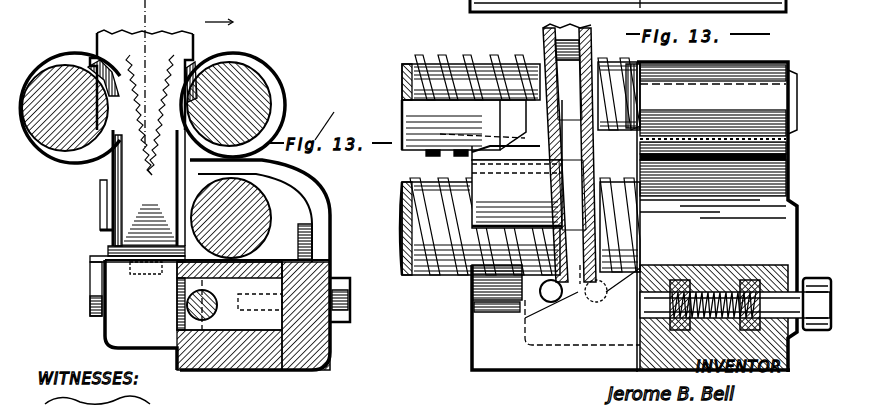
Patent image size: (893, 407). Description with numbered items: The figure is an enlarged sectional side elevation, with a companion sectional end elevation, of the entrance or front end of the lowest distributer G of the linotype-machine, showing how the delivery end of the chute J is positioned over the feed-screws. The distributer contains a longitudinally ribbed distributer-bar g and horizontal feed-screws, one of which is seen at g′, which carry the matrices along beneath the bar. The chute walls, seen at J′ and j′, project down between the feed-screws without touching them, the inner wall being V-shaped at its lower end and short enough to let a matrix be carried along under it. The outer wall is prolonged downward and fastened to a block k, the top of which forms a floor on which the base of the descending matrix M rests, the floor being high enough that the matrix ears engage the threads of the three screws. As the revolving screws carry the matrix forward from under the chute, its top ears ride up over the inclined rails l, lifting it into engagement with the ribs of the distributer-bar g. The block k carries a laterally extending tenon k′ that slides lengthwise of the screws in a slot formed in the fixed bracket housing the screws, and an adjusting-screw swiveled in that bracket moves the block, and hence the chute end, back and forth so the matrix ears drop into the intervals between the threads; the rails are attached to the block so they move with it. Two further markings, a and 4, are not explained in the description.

In FIG. 13A, the distributer-bar g is at (430, 72).
In FIG. 13, the feed-screw g′ is at (236, 97).
In FIG. 13A, the feed-screw g′ is at (559, 80).
In FIG. 13, the chute J is at (130, 46).
In FIG. 13A, the chute J is at (548, 40).
In FIG. 13A, the chute wall J′ is at (587, 153).
In FIG. 13A, the outer wall of chute j′ is at (620, 168).
In FIG. 13, the distributer G is at (315, 119).
In FIG. 13A, the distributer G is at (726, 217).
In FIG. 13, the matrix M is at (112, 250).
In FIG. 13A, the matrix M is at (713, 241).
In FIG. 13, the inclined rail l is at (107, 186).
In FIG. 13A, the inclined rail l is at (544, 186).
In FIG. 13, the block k is at (118, 282).
In FIG. 13A, the block k is at (631, 317).
In FIG. 13, the tenon k′ is at (260, 212).
In FIG. 13A, the tenon k′ is at (695, 317).
In FIG. 13A, the shaft a is at (440, 124).
In FIG. 13, the section line 4 is at (186, 206).